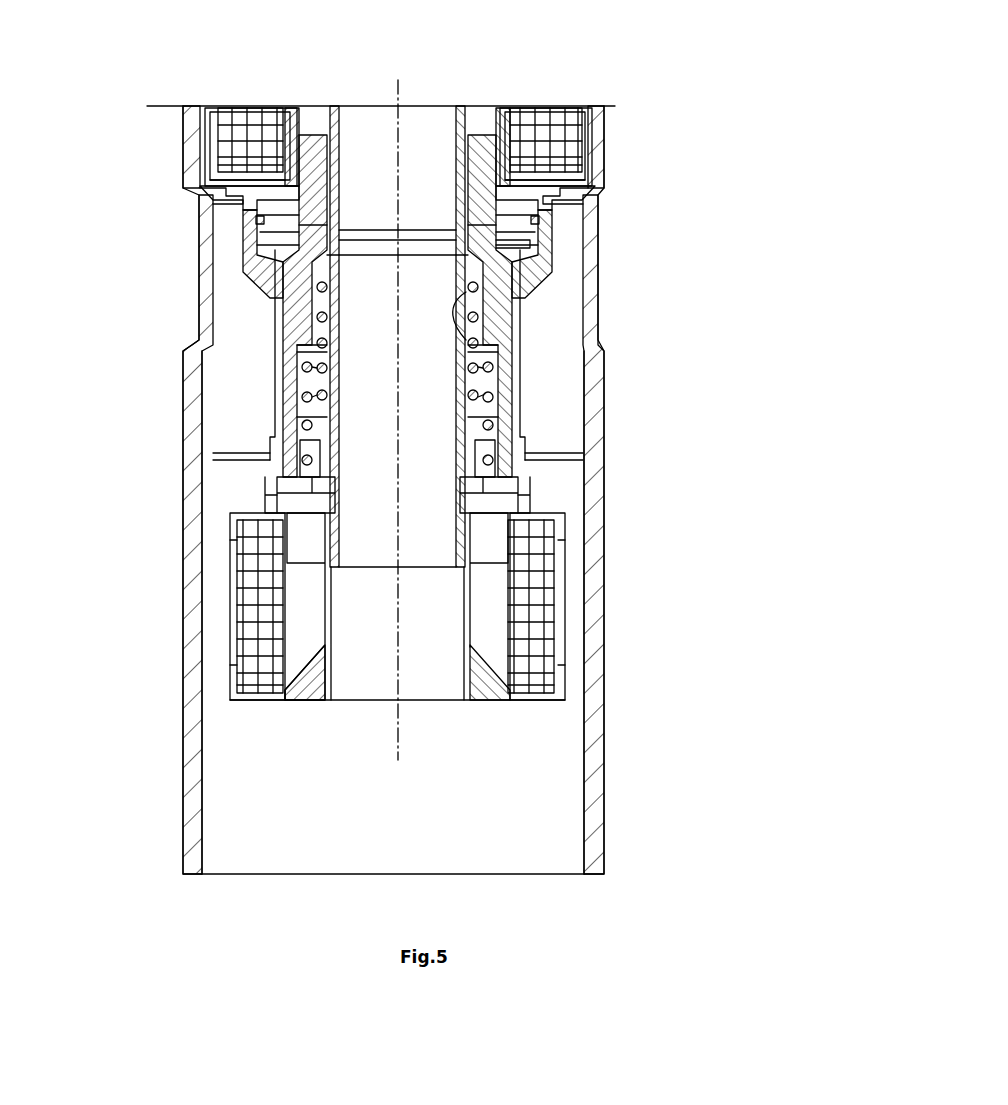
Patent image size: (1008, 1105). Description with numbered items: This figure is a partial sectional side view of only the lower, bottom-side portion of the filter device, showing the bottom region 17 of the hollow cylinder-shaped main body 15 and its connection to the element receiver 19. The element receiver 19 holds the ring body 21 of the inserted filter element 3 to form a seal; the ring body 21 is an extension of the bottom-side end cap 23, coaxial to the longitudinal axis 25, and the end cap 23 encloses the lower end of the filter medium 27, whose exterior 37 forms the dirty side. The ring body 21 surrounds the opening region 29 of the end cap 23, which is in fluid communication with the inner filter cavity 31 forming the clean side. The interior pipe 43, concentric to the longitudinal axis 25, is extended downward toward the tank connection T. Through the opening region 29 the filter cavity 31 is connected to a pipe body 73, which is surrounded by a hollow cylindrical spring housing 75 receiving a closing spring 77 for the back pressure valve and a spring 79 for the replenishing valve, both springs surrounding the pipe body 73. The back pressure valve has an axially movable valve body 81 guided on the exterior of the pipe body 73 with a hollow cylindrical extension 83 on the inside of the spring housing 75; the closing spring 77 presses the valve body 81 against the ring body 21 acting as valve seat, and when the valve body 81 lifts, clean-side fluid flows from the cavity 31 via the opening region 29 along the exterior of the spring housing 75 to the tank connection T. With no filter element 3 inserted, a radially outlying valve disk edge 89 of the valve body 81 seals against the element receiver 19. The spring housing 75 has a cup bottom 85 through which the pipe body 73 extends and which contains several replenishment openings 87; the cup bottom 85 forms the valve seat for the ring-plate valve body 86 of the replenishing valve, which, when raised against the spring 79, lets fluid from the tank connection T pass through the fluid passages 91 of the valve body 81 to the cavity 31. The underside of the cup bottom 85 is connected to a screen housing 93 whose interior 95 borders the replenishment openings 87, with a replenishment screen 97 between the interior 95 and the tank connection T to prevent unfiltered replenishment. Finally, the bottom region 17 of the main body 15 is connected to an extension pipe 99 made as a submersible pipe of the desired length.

The filter element 3 is at (533, 94).
The main body 15 is at (604, 141).
The bottom region 17 is at (616, 294).
The element receiver 19 is at (550, 200).
The ring body 21 is at (266, 226).
The bottom-side end cap 23 is at (222, 182).
The longitudinal axis 25 is at (402, 94).
The filter medium 27 is at (243, 125).
The opening region 29 is at (305, 200).
The inner filter cavity 31 is at (297, 150).
The exterior of the filter medium 37 is at (582, 114).
The interior pipe 43 is at (337, 145).
The pipe body 73 is at (500, 352).
The spring housing 75 is at (280, 385).
The closing spring 77 is at (318, 320).
The spring 79 is at (500, 425).
The valve body 81 is at (325, 270).
The hollow cylindrical extension 83 is at (300, 355).
The cup bottom 85 is at (300, 481).
The valve body 86 is at (318, 462).
The replenishment openings 87 is at (318, 491).
The valve disk edge 89 is at (528, 243).
The fluid passages 91 is at (470, 262).
The screen housing 93 is at (230, 580).
The interior 95 is at (300, 620).
The replenishment screen 97 is at (540, 571).
The extension pipe 99 is at (598, 624).
The tank connection T is at (442, 703).